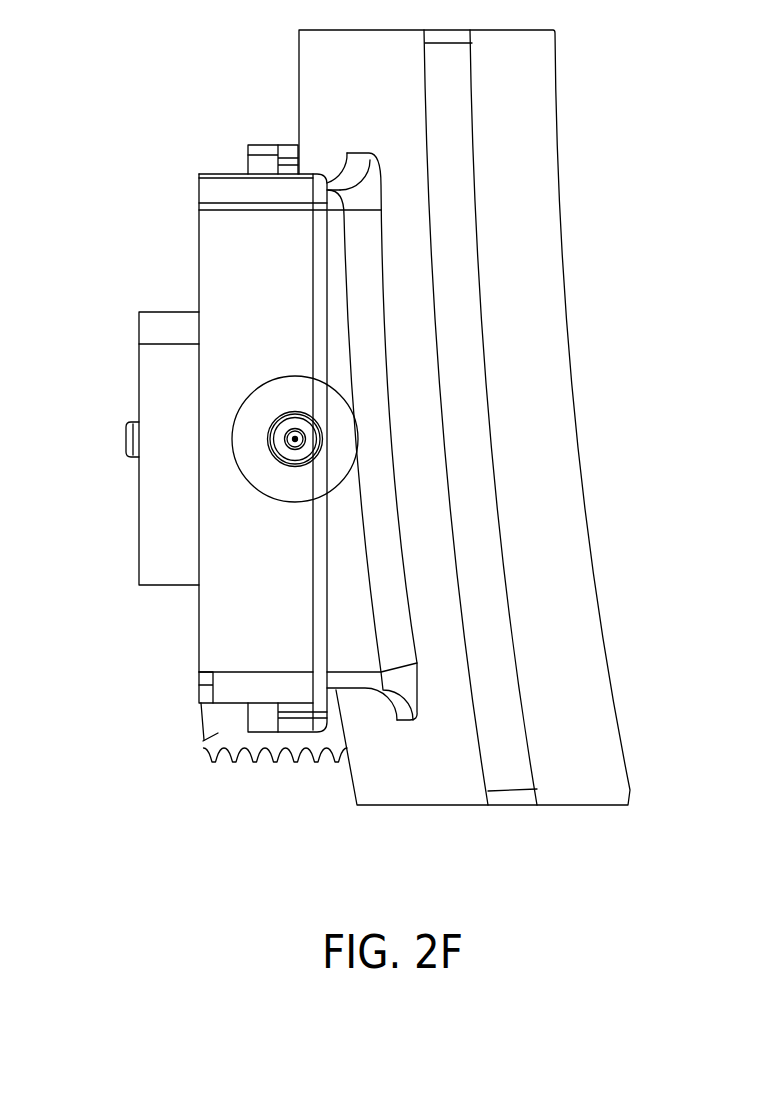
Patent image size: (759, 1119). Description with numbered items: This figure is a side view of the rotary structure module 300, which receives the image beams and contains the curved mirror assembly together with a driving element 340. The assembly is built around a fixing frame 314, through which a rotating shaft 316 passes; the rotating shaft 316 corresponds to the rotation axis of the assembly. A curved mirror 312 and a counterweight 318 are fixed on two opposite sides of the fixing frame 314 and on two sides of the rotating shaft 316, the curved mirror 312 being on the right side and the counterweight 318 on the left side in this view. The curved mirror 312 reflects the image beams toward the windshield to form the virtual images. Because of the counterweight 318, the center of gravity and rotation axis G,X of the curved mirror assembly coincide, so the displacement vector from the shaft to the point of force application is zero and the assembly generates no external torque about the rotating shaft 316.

The rotary structure module 300 is at (366, 444).
The curved mirror 312 is at (540, 332).
The fixing frame 314 is at (220, 253).
The rotating shaft 316 is at (246, 454).
The counterweight 318 is at (155, 388).
The driving element 340 is at (203, 741).
The center of gravity and rotation axis G,X is at (302, 443).